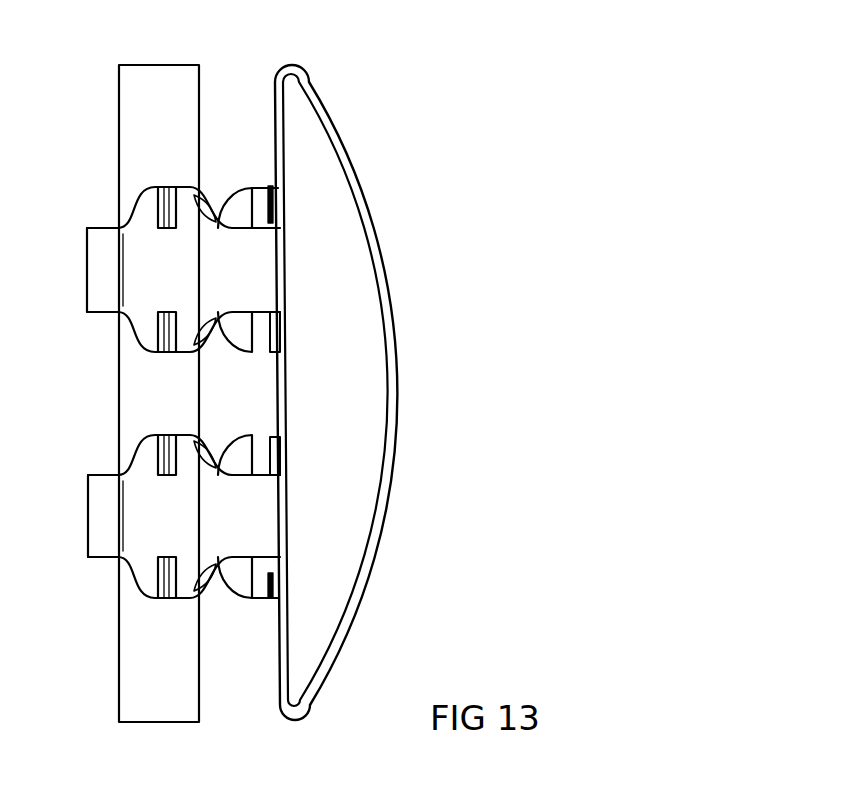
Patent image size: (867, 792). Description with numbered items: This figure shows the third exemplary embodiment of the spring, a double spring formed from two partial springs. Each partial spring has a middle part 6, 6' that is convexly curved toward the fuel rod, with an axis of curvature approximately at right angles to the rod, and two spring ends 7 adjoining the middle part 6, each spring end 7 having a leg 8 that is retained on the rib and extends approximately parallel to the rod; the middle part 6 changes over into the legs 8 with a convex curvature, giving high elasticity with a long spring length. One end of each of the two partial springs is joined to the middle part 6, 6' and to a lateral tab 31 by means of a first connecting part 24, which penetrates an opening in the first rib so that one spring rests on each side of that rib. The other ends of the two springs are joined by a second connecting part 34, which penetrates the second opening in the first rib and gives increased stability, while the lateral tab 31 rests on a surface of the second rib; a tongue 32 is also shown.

The middle part 6 is at (373, 392).
The middle part 6' is at (125, 393).
The spring end 7 is at (280, 204).
The leg 8 is at (282, 332).
The first connecting part 24 is at (98, 278).
The second connecting part 34 is at (102, 512).
The lateral tab 31 is at (197, 223).
The tongue 32 is at (207, 592).